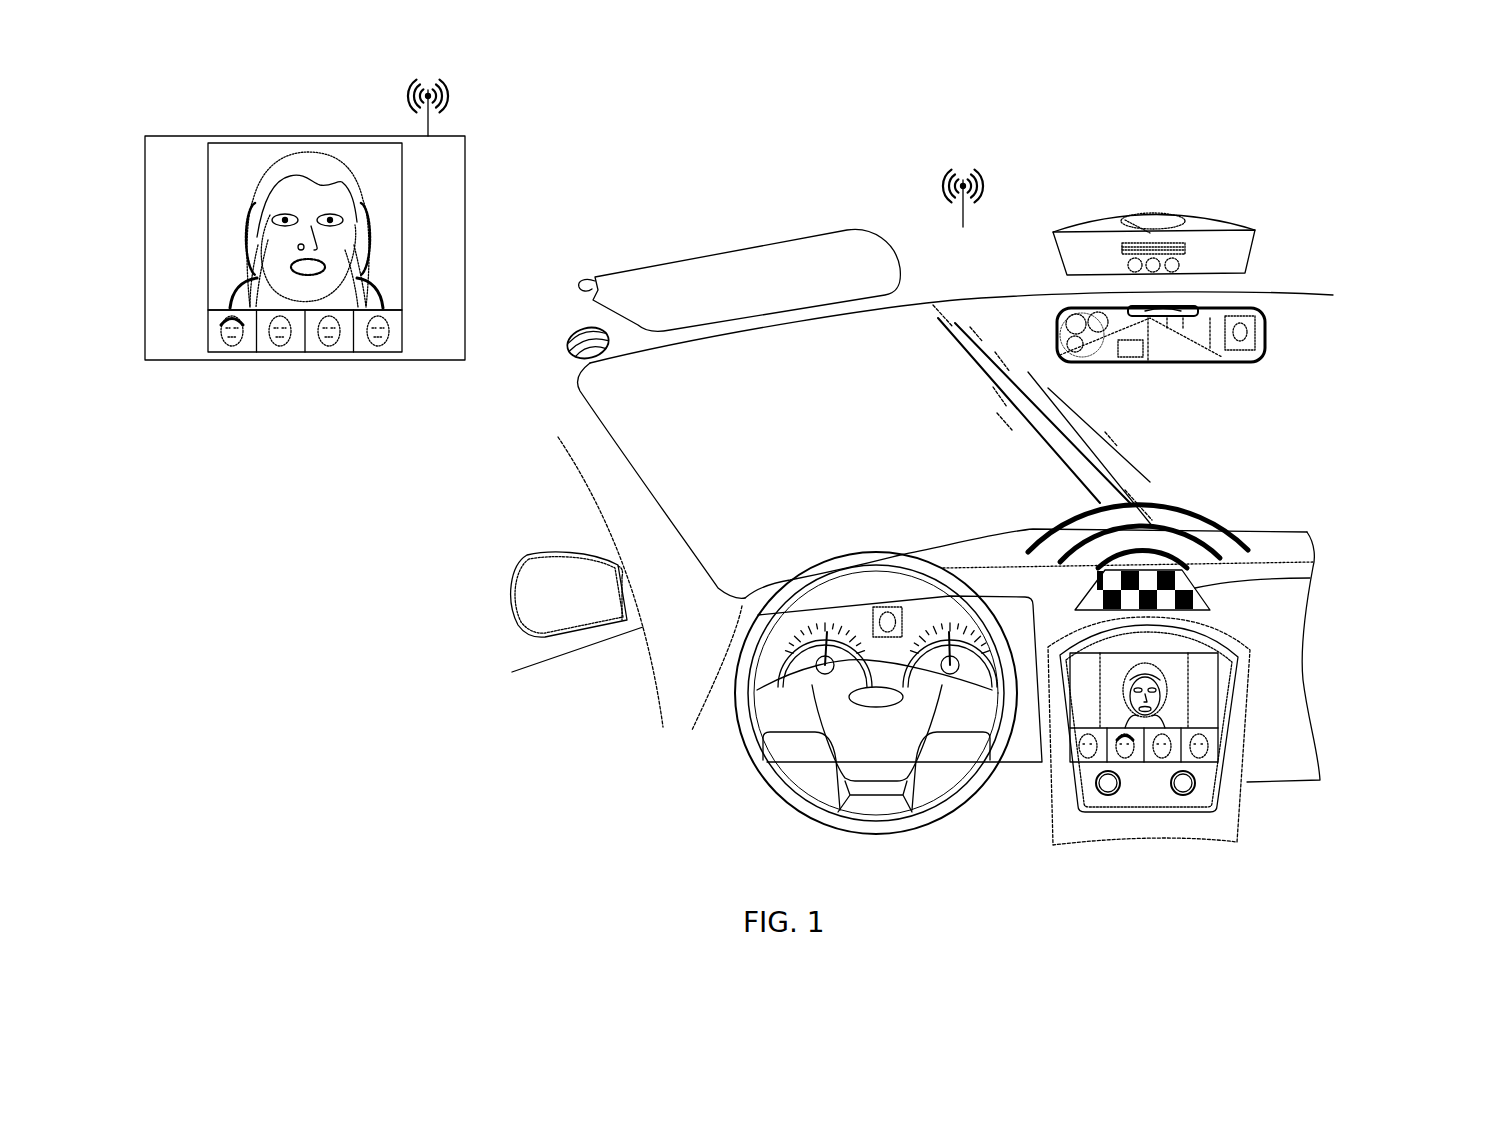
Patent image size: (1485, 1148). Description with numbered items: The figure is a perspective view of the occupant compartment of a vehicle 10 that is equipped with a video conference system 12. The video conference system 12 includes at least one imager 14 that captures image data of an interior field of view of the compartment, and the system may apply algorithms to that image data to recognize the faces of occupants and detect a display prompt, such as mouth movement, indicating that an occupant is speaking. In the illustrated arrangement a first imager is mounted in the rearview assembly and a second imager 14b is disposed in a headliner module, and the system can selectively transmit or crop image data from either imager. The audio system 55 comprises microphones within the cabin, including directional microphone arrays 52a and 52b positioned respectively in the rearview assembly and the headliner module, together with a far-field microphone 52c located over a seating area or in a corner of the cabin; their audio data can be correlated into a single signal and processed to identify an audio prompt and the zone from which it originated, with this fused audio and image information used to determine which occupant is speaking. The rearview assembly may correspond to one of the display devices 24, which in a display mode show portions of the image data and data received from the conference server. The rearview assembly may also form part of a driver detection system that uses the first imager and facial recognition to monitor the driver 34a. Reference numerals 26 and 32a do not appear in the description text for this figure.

The vehicle 10 is at (562, 361).
The video conference system 12 is at (1383, 282).
The imager 14 is at (1060, 310).
The second imager 14b is at (1122, 222).
The display device 24 is at (233, 200).
The rearview mirror 26 is at (1268, 340).
The display screen 32a is at (393, 242).
The driver 34a is at (317, 173).
The directional microphone array 52a is at (1190, 305).
The directional microphone array 52b is at (1153, 250).
The far-field microphone 52c is at (567, 332).
The audio system 55 is at (1205, 590).